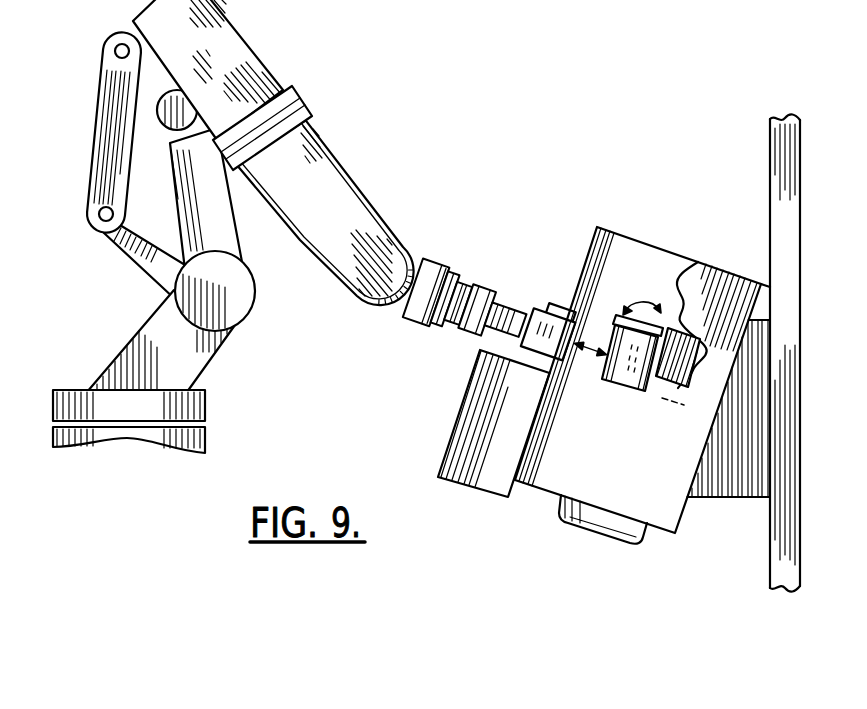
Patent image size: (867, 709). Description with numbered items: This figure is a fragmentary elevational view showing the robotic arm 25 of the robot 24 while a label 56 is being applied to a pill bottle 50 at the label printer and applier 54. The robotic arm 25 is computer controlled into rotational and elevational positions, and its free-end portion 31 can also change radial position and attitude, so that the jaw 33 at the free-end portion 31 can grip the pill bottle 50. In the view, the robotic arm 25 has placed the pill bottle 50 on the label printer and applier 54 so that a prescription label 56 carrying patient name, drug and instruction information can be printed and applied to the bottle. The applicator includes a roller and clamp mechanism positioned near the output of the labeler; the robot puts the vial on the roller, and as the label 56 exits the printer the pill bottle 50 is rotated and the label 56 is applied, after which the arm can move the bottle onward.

The robot 24 is at (92, 243).
The robotic arm 25 is at (236, 60).
The free-end portion 31 is at (502, 332).
The jaw 33 is at (545, 330).
The pill bottle 50 is at (628, 377).
The label printer and applier 54 is at (634, 464).
The label 56 is at (609, 332).